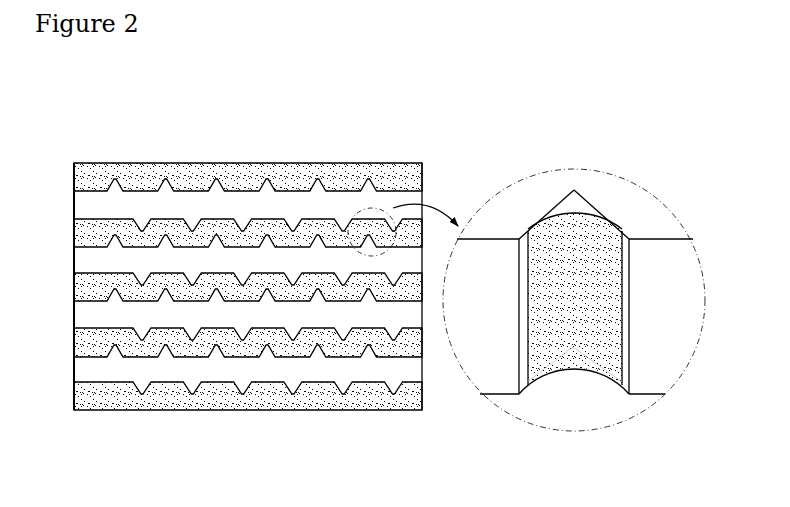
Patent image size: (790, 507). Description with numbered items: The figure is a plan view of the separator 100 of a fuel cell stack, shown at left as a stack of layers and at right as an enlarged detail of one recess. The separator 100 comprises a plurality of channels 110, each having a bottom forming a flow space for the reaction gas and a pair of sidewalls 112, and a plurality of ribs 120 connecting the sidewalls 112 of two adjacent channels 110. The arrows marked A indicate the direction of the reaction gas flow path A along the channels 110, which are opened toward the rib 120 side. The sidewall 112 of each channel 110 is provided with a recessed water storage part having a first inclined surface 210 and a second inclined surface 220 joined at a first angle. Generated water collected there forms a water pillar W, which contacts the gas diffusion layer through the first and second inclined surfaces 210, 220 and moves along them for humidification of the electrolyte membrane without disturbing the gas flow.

The separator 100 is at (48, 62).
The channel 110 is at (270, 262).
The rib 120 is at (205, 237).
The first inclined surface 210 is at (565, 197).
The second inclined surface 220 is at (601, 183).
The sidewall 112 is at (650, 380).
The water pillar W is at (570, 366).
The reaction gas flow path A is at (103, 205).